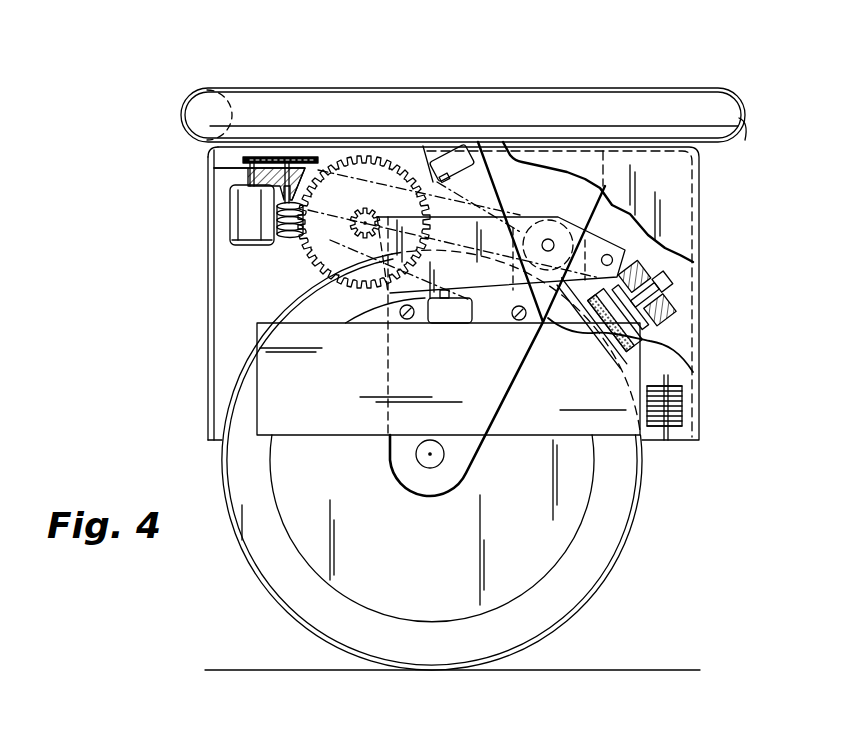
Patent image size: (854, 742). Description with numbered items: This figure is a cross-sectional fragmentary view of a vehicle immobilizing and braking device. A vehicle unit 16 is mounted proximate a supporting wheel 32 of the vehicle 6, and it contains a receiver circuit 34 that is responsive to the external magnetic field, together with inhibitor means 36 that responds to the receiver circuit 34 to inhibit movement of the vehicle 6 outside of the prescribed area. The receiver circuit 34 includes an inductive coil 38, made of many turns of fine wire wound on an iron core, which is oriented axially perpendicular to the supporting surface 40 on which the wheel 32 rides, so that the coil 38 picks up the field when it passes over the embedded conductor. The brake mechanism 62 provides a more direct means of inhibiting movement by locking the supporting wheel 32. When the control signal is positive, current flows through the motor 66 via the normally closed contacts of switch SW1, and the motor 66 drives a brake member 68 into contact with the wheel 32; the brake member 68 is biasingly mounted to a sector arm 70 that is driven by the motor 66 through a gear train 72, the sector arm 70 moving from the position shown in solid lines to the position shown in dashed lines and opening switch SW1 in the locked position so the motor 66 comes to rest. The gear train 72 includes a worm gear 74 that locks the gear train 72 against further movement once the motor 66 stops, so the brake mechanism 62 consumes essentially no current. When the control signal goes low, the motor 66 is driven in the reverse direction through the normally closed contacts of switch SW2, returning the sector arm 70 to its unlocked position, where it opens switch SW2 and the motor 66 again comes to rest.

The vehicle 6 is at (226, 82).
The vehicle unit 16 is at (720, 270).
The supporting wheel 32 is at (284, 572).
The receiver circuit 34 is at (501, 319).
The inhibitor means 36 is at (343, 448).
The inductive coil 38 is at (682, 406).
The supporting surface 40 is at (654, 668).
The brake mechanism 62 is at (612, 328).
The motor 66 is at (238, 205).
The brake member 68 is at (596, 322).
The sector arm 70 is at (507, 212).
The gear train 72 is at (293, 268).
The worm gear 74 is at (282, 242).
The switch SW1 is at (458, 162).
The switch SW2 is at (447, 312).